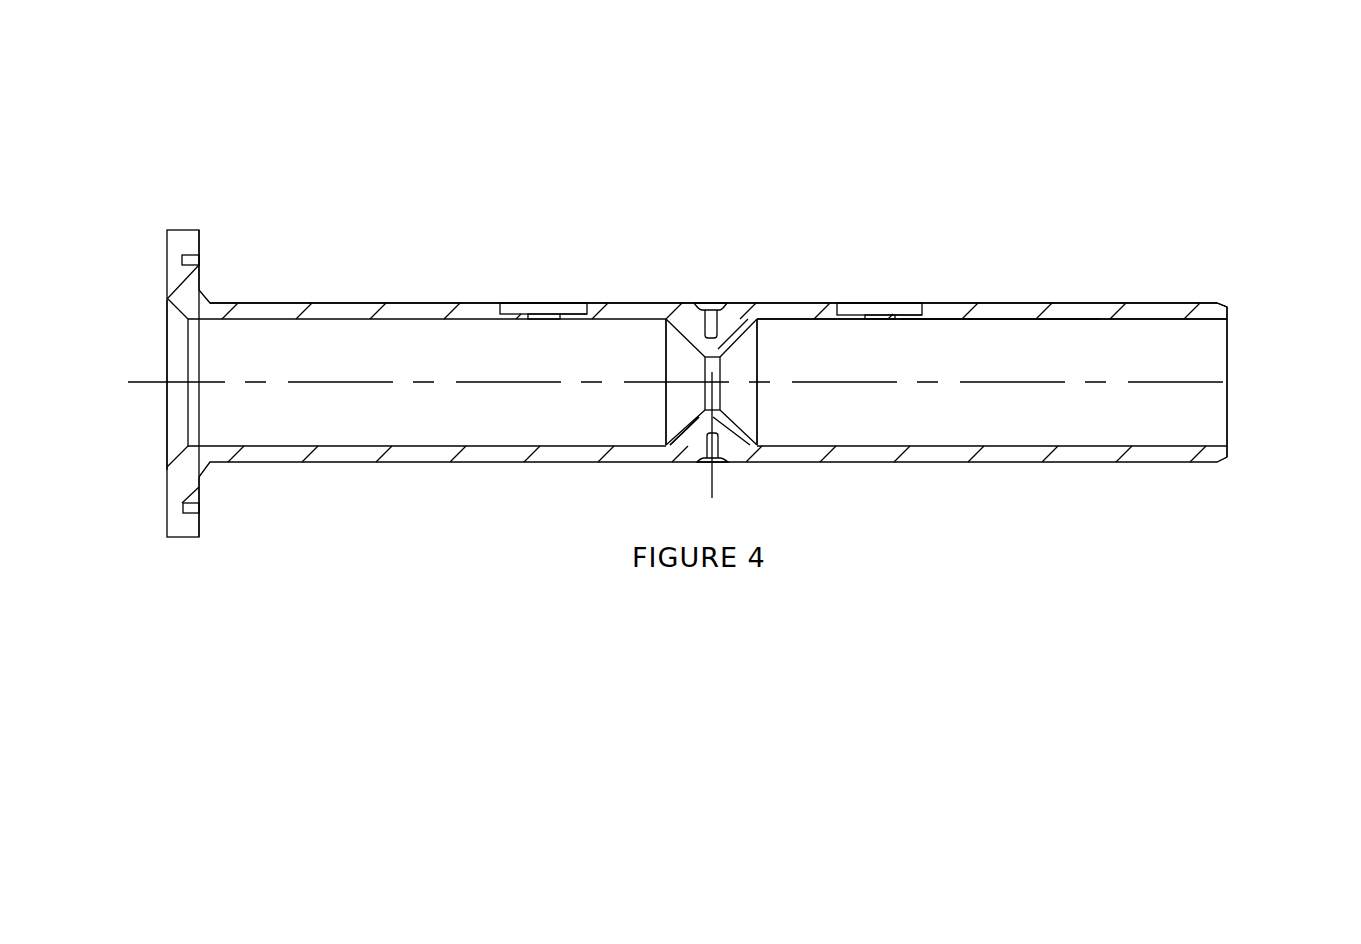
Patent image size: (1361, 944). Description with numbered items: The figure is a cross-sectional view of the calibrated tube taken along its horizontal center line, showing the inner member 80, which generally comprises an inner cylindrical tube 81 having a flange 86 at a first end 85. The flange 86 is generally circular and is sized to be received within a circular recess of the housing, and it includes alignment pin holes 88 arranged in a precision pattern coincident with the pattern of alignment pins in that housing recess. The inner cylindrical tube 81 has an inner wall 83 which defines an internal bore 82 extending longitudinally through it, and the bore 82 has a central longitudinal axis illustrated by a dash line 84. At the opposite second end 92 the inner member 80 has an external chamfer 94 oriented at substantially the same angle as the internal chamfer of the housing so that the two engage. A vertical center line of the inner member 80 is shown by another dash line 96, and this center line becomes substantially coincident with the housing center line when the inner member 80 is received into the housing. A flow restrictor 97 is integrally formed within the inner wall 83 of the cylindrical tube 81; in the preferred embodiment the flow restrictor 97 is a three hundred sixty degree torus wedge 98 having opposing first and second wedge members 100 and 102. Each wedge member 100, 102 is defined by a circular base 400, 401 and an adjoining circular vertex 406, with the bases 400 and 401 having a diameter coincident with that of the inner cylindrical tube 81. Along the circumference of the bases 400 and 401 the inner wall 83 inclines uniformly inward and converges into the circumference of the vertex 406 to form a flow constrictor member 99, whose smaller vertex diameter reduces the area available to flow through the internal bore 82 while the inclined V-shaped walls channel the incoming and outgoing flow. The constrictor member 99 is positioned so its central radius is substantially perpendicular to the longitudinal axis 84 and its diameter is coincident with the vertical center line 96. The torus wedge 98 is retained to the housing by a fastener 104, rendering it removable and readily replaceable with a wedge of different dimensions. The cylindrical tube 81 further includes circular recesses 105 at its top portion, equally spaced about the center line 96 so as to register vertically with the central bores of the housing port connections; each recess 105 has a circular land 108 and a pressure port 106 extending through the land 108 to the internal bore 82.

The inner member 80 is at (764, 71).
The inner cylindrical tube 81 is at (480, 465).
The internal bore 82 is at (1204, 349).
The inner wall 83 is at (1002, 321).
The central longitudinal axis 84 is at (152, 383).
The first end 85 is at (167, 266).
The flange 86 is at (180, 510).
The alignment pin holes 88 is at (202, 257).
The second end 92 is at (1232, 413).
The external chamfer 94 is at (1228, 301).
The vertical center line 96 is at (712, 485).
The flow restrictor 97 is at (730, 439).
The torus wedge 98 is at (711, 382).
The flow constrictor member 99 is at (730, 404).
The first wedge member 100 is at (759, 362).
The second wedge member 102 is at (670, 351).
The fastener 104 is at (710, 301).
The circular recesses 105 is at (550, 302).
The pressure port 106 is at (542, 313).
The circular land 108 is at (568, 310).
The circular base 400 is at (757, 437).
The circular base 401 is at (683, 425).
The circular vertex 406 is at (722, 356).